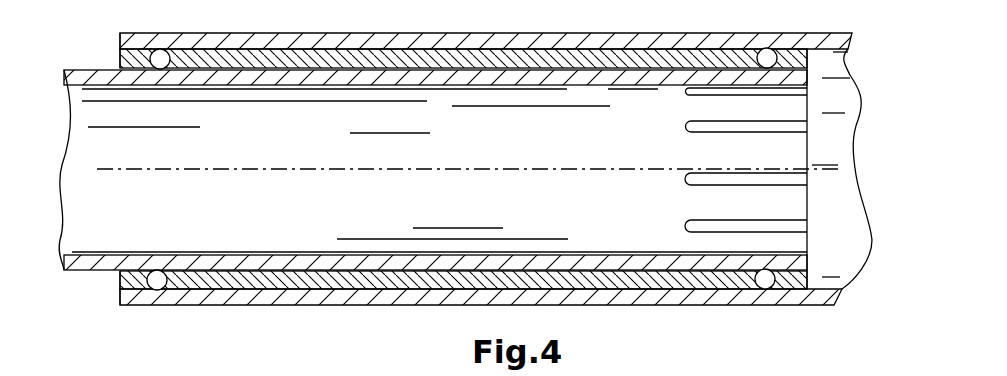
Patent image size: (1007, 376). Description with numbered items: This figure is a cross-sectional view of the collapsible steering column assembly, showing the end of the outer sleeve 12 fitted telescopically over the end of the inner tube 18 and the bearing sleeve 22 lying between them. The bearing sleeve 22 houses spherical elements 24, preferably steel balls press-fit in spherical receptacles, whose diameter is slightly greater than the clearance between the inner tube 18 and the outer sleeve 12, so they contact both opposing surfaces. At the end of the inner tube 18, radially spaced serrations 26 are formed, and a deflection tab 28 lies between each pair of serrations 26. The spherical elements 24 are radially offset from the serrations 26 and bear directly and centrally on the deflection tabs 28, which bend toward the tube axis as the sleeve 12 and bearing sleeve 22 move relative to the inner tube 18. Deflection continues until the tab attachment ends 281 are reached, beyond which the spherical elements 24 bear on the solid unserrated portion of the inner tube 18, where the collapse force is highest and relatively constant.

The outer sleeve 12 is at (334, 298).
The inner tube 18 is at (335, 258).
The bearing sleeve 22 is at (358, 282).
The spherical elements 24 is at (156, 289).
The serrations 26 is at (805, 128).
The deflection tabs 28 is at (793, 106).
The tab attachment ends 281 is at (692, 143).